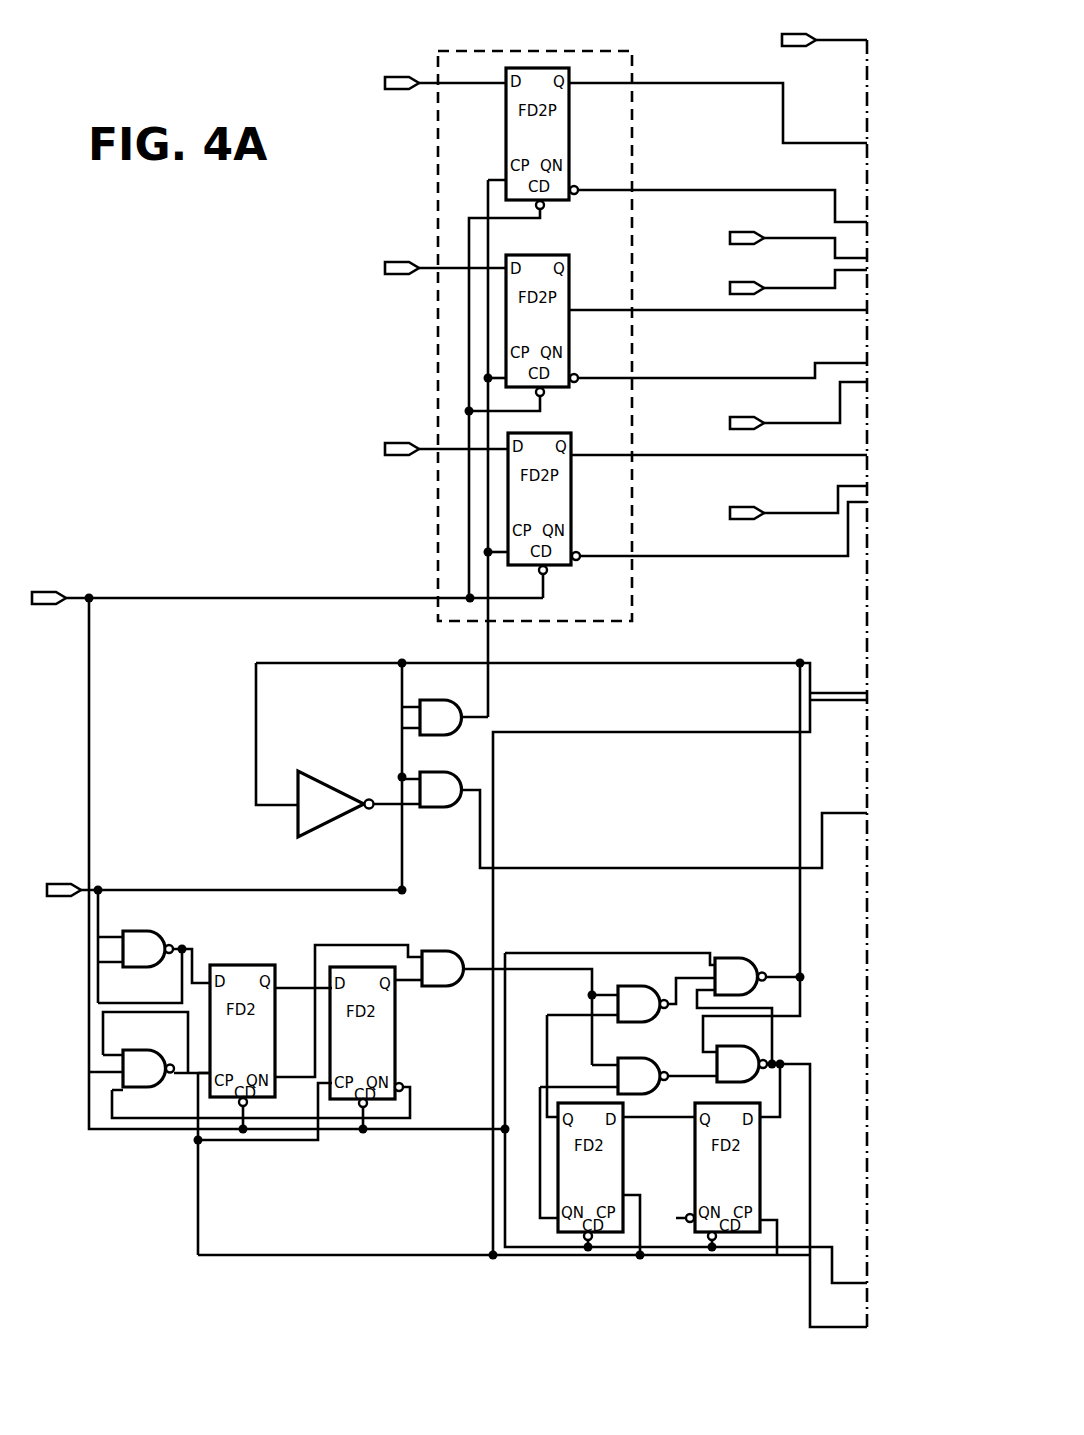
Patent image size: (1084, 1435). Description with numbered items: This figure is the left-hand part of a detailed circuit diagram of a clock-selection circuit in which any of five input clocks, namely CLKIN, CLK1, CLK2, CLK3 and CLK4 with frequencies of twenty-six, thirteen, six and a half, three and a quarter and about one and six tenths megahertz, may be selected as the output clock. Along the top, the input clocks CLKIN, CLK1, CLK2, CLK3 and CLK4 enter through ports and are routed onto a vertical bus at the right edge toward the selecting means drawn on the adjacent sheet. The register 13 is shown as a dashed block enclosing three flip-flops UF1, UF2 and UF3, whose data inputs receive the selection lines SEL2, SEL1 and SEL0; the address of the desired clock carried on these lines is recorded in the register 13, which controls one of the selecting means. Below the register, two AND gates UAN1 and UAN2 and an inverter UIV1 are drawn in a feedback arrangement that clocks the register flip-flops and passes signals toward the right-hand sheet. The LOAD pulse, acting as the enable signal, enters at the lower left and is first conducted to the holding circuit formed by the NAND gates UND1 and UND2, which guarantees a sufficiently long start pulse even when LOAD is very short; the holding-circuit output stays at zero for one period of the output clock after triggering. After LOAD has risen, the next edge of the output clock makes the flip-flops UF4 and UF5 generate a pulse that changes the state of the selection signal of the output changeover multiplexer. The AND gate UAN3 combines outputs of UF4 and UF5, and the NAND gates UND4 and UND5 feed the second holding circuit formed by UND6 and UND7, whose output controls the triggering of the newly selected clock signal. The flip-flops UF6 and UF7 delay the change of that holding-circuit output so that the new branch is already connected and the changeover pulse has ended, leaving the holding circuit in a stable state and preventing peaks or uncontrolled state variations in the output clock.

The register 13 is at (443, 157).
The D flip-flop FD2P UF1 is at (668, 392).
The D flip-flop FD2P UF2 is at (666, 335).
The D flip-flop FD2P UF3 is at (676, 515).
The pulse-generating circuit UF4 is at (308, 1100).
The pulse-generating circuit UF5 is at (384, 1048).
The flip-flop UF6 is at (602, 1135).
The flip-flop UF7 is at (714, 1179).
The AND gate AN2 UAN1 is at (445, 707).
The AND gate AN2 UAN2 is at (634, 810).
The AND gate AN2 UAN3 is at (502, 997).
The holding circuit gate UND1 is at (154, 957).
The holding circuit gate UND2 is at (249, 1065).
The NAND gate ND2 UND4 is at (631, 994).
The NAND gate ND2 UND5 is at (628, 1066).
The holding circuit gate UND6 is at (751, 1000).
The holding circuit gate UND7 is at (784, 1177).
The inverter IVA UIV1 is at (338, 753).
The selection line SEL2 is at (421, 85).
The selection line SEL1 is at (421, 270).
The selection line SEL0 is at (422, 451).
The input clock CLKIN is at (795, 42).
The input clock CLK1 is at (777, 244).
The input clock CLK2 is at (777, 285).
The input clock CLK3 is at (777, 408).
The input clock CLK4 is at (777, 505).
The enable signal LOAD is at (224, 943).